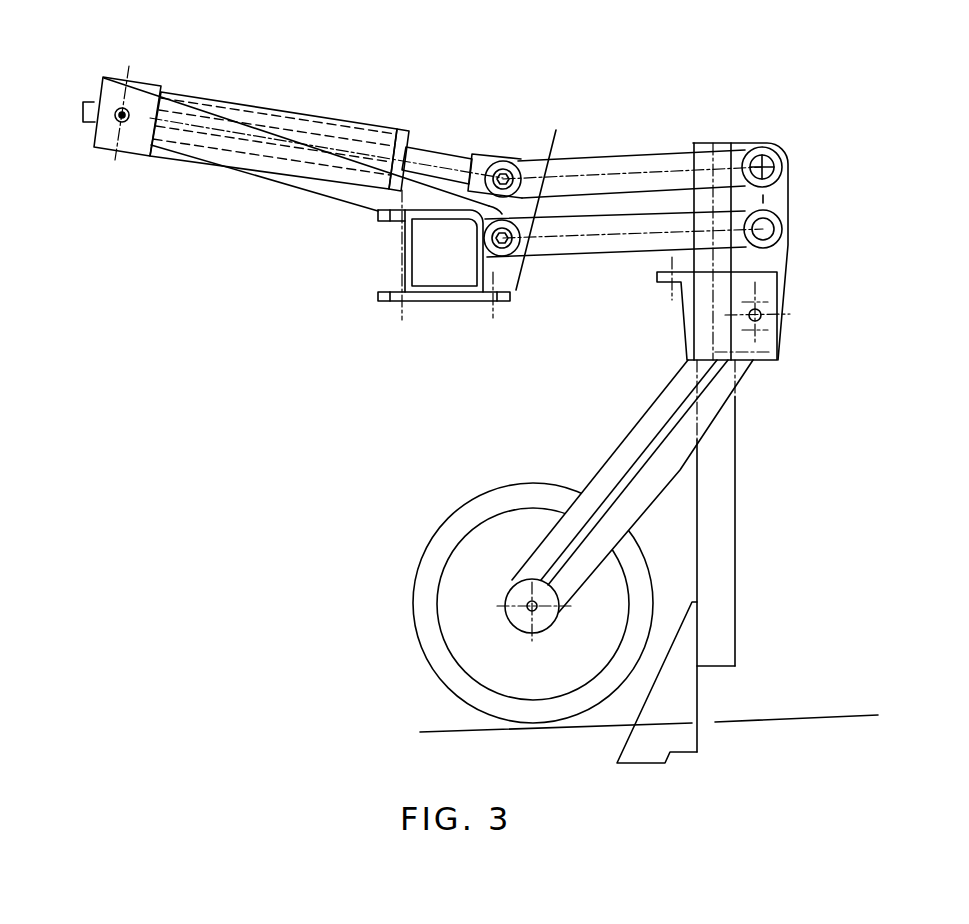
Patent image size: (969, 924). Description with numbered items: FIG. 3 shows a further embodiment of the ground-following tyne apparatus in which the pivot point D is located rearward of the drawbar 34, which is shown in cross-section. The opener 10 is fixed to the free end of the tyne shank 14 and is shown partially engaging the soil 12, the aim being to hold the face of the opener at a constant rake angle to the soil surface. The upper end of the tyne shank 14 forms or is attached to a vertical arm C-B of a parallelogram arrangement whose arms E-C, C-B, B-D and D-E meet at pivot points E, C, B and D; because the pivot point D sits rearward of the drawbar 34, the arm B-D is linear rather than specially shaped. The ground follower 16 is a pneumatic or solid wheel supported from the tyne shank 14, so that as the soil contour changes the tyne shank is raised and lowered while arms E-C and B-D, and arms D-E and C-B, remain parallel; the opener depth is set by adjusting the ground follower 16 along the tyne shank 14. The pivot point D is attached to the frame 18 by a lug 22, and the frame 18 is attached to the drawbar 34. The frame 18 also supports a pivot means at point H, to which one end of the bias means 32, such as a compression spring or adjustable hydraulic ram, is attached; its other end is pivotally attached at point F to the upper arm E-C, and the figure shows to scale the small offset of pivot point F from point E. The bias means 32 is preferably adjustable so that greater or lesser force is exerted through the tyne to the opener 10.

The opener 10 is at (688, 686).
The soil 12 is at (649, 735).
The tyne shank 14 is at (728, 600).
The ground follower 16 is at (416, 599).
The frame 18 is at (372, 224).
The lug 22 is at (516, 294).
The bias means 32 is at (262, 110).
The drawbar 34 is at (404, 272).
The pivot point B is at (781, 237).
The pivot point C is at (787, 154).
The pivot point D is at (518, 256).
The pivot point E is at (491, 158).
The pivot point F is at (518, 172).
The pivot point H is at (108, 94).